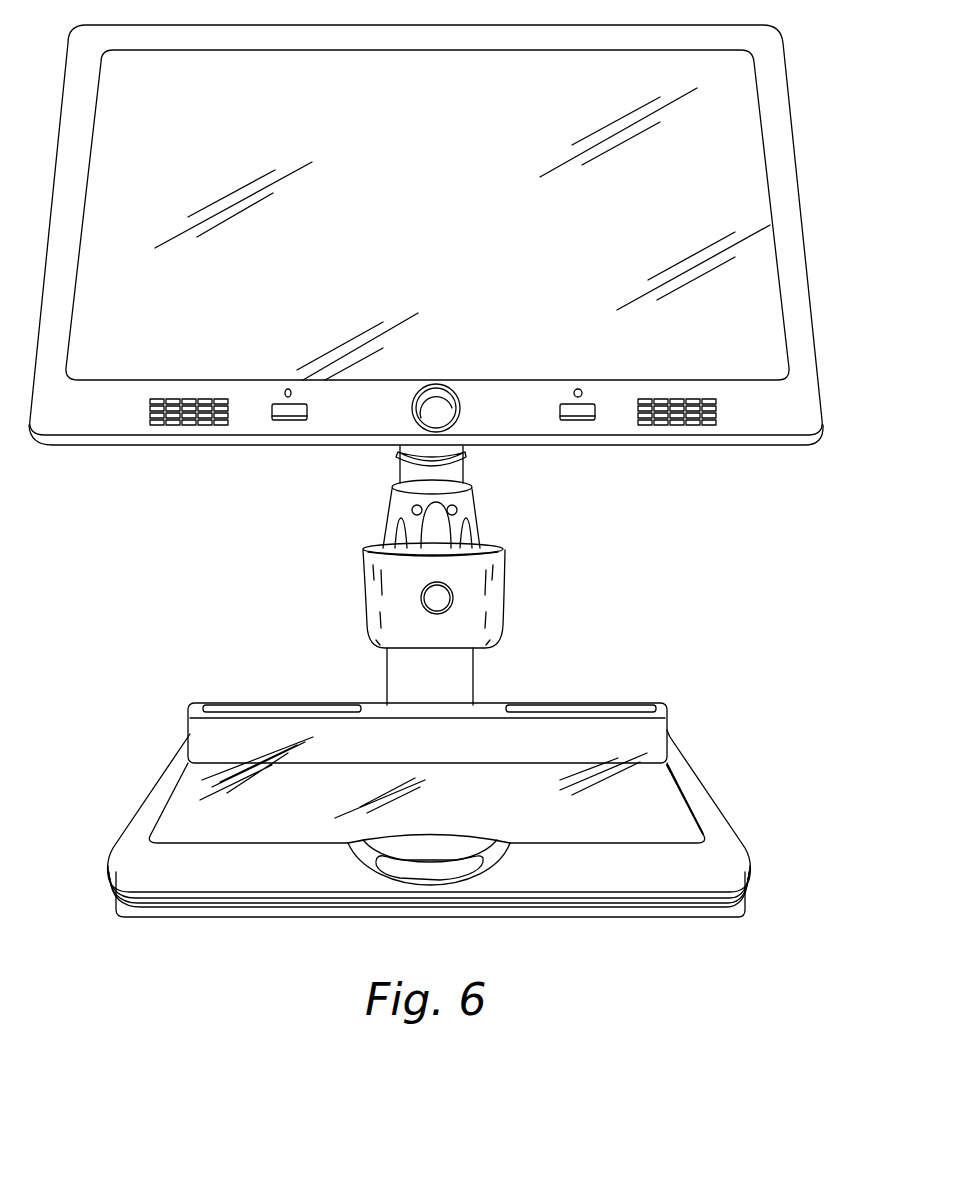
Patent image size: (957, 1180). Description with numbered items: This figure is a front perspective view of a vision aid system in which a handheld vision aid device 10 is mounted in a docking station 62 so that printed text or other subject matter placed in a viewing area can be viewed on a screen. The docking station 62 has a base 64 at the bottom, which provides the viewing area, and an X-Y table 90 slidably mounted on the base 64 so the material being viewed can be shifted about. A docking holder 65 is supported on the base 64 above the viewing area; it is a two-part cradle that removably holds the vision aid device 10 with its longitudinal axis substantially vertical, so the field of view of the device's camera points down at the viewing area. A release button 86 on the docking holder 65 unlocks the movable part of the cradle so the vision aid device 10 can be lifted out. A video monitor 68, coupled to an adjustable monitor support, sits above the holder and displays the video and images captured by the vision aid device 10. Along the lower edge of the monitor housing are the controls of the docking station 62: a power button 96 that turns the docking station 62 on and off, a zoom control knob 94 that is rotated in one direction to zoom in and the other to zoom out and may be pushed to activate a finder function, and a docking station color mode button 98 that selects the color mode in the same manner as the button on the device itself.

The vision aid device 10 is at (479, 504).
The docking station 62 is at (648, 457).
The base 64 is at (745, 907).
The docking holder 65 is at (493, 587).
The video monitor 68 is at (790, 263).
The release button 86 is at (447, 598).
The X-Y table 90 is at (707, 797).
The zoom control knob 94 is at (424, 404).
The power button 96 is at (581, 421).
The docking station color mode button 98 is at (288, 421).